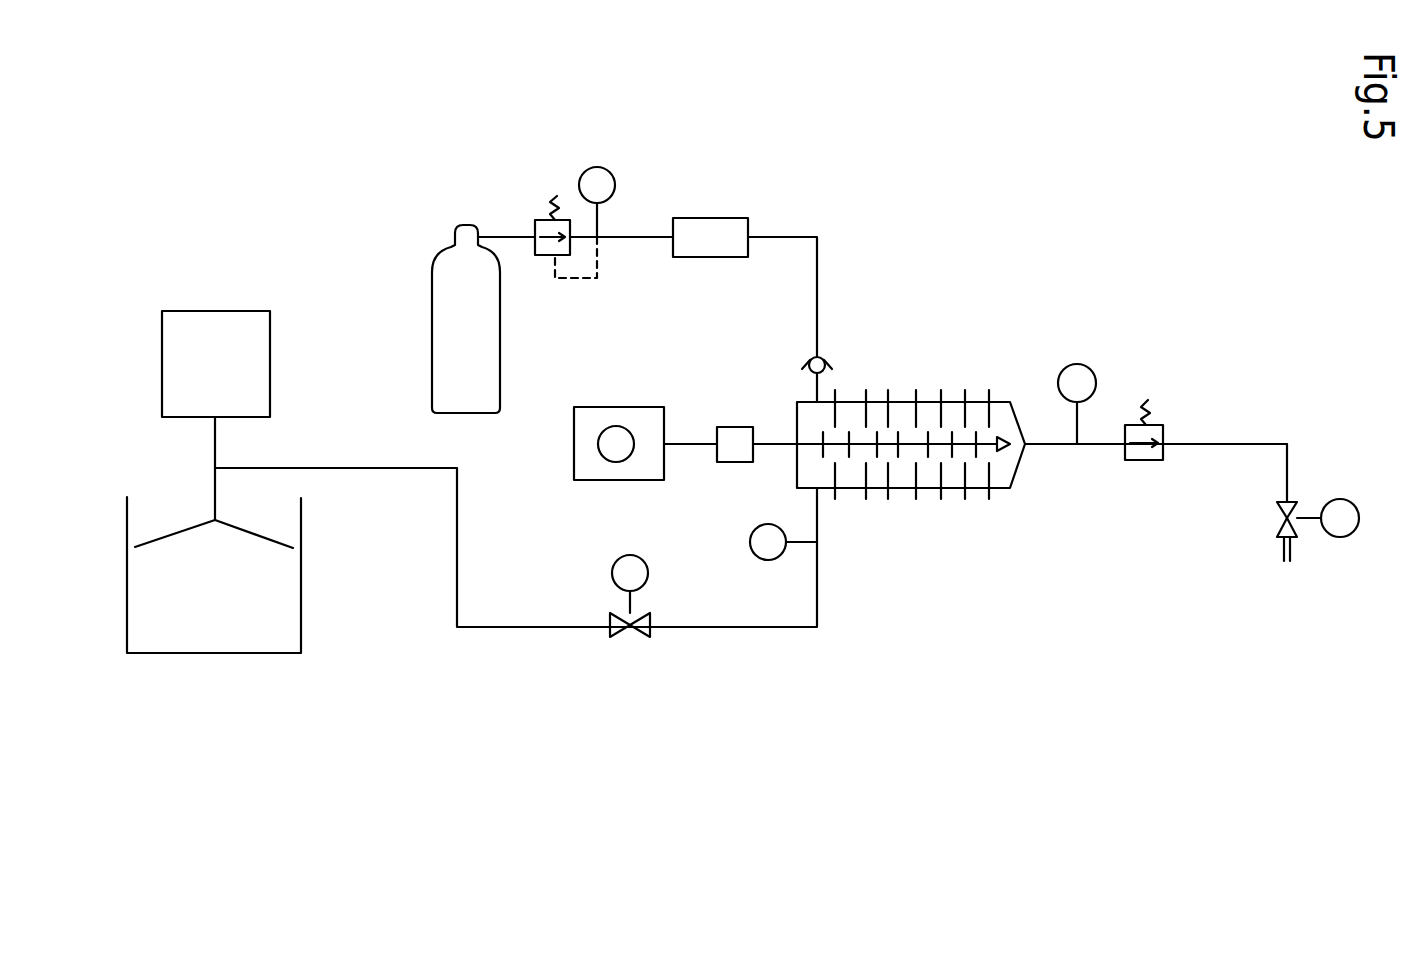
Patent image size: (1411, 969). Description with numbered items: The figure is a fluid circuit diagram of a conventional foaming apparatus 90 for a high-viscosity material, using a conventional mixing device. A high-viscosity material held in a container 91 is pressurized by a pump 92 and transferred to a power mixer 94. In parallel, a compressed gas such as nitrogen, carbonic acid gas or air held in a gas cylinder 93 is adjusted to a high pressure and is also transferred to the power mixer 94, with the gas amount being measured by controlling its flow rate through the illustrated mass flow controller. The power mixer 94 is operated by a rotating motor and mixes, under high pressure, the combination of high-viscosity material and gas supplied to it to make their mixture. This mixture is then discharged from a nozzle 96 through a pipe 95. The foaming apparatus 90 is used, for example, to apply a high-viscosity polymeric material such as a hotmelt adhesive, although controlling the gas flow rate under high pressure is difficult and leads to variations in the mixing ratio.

The foaming apparatus 90 is at (325, 224).
The container 91 is at (301, 585).
The pump 92 is at (270, 375).
The gas cylinder 93 is at (432, 290).
The power mixer 94 is at (900, 402).
The pipe 95 is at (1222, 443).
The nozzle 96 is at (1282, 548).